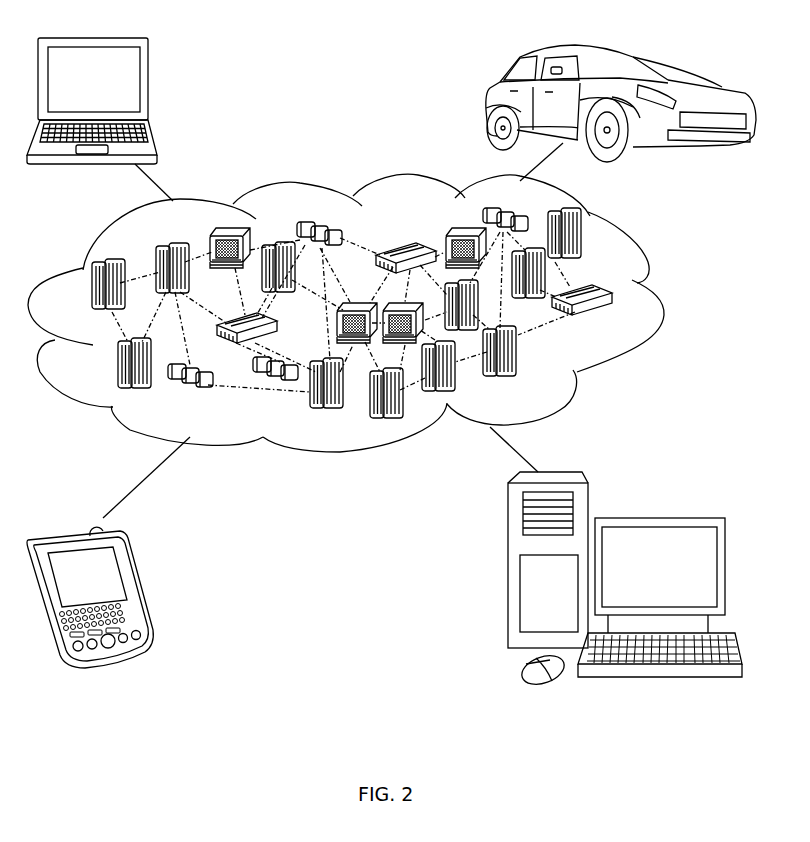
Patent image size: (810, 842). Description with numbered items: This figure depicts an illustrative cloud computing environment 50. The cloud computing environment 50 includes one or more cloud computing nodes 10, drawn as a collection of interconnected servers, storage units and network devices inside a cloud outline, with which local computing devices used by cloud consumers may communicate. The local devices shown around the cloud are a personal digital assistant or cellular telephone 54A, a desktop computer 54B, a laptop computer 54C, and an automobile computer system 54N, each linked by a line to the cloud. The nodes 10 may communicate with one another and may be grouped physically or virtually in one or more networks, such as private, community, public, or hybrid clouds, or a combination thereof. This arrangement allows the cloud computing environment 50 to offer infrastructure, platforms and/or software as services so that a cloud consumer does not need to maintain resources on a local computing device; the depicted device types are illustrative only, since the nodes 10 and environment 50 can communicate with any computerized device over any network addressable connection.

The cloud computing node 10 is at (613, 321).
The cloud computing environment 50 is at (658, 302).
The personal digital assistant or cellular telephone 54A is at (137, 585).
The desktop computer 54B is at (657, 518).
The laptop computer 54C is at (149, 90).
The automobile computer system 54N is at (490, 102).